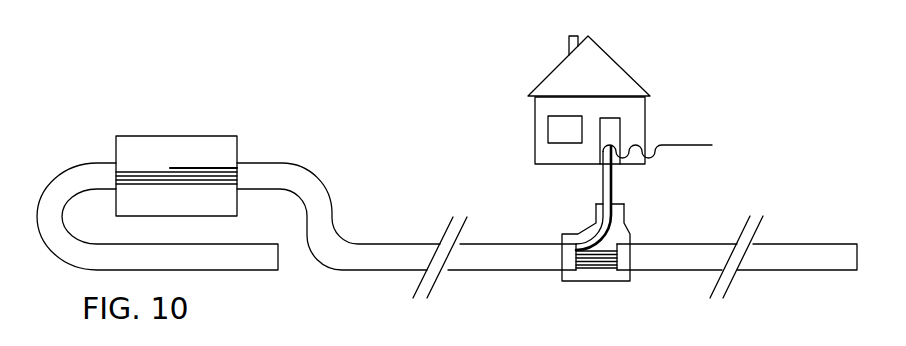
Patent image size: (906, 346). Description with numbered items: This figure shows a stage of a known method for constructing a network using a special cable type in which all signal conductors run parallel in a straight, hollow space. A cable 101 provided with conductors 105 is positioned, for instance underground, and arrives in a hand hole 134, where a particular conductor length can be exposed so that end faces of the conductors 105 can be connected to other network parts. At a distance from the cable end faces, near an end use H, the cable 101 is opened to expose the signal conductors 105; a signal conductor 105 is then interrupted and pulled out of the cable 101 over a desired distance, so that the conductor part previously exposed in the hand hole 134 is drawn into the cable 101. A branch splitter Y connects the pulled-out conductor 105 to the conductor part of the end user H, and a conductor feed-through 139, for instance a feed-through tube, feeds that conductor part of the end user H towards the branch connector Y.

The cable 101 is at (361, 253).
The hand hole 134 is at (123, 148).
The conductors 105 is at (184, 167).
The conductor feed-through 139 is at (613, 198).
The end use H is at (617, 88).
The branch splitter Y is at (607, 280).